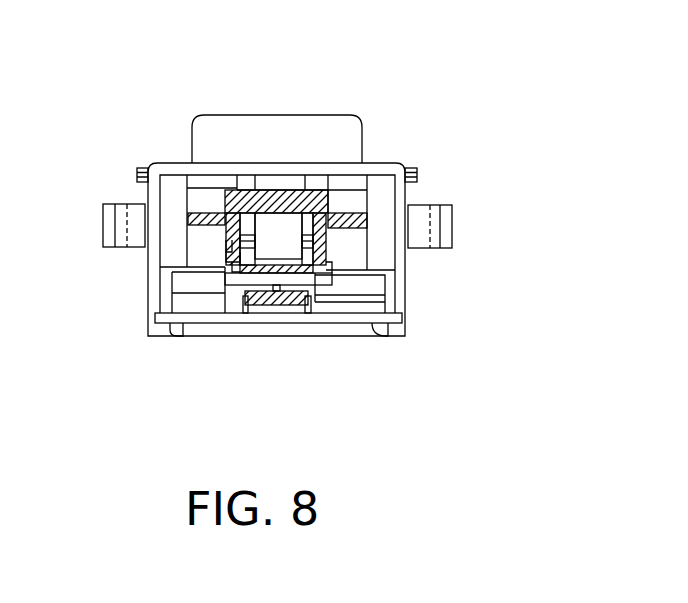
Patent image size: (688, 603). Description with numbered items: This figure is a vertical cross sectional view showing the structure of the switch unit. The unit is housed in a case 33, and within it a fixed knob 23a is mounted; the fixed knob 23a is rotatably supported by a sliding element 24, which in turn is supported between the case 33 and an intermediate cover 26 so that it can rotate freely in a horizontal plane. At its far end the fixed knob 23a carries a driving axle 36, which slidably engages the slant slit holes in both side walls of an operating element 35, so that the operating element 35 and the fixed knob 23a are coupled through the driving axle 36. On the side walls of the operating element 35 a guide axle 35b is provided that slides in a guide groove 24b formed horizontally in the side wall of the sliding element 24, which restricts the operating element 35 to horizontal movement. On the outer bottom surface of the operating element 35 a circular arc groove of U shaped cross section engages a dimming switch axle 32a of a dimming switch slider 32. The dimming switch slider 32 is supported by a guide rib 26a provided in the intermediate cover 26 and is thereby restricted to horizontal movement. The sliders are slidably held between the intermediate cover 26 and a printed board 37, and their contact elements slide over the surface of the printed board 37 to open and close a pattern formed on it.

The fixed knob 23a is at (285, 218).
The sliding element 24 is at (262, 183).
The guide groove 24b is at (238, 237).
The intermediate cover 26 is at (390, 290).
The guide rib 26a is at (314, 318).
The dimming switch slider 32 is at (277, 298).
The dimming switch axle 32a is at (279, 288).
The case 33 is at (350, 123).
The operating element 35 is at (236, 277).
The guide axle 35b is at (322, 260).
The driving axle 36 is at (245, 241).
The printed board 37 is at (370, 322).